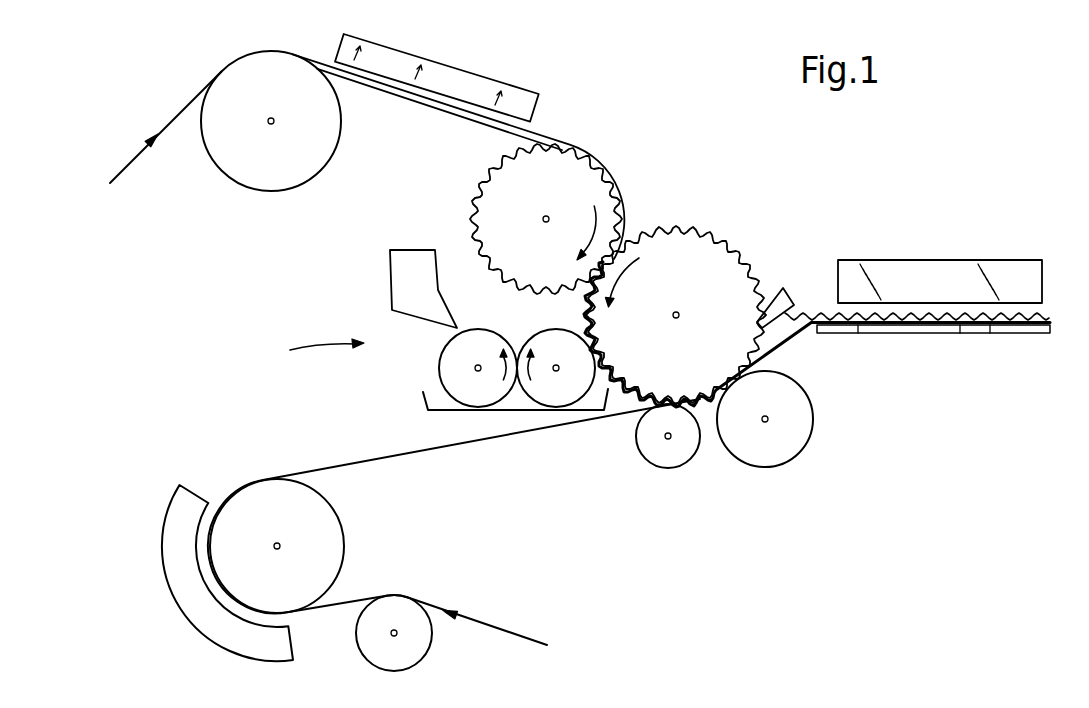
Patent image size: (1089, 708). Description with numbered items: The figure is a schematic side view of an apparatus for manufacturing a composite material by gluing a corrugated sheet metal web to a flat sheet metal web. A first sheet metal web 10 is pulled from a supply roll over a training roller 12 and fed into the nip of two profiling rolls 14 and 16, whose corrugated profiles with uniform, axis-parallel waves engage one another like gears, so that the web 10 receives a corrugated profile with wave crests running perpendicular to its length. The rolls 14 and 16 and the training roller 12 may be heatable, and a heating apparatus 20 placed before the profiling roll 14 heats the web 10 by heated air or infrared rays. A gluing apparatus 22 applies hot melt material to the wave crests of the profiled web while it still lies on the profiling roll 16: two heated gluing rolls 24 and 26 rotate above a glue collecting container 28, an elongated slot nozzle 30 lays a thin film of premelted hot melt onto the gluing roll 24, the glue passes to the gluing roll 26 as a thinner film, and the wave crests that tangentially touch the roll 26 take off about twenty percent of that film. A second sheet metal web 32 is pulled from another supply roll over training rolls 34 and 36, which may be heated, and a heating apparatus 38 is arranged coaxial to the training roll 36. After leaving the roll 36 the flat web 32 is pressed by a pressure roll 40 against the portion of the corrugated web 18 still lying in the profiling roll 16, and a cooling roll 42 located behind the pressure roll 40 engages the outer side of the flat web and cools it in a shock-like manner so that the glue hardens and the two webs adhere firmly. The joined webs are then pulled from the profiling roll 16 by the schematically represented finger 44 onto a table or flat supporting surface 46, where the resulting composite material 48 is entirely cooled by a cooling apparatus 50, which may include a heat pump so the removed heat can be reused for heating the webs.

The first sheet metal web 10 is at (412, 100).
The training roller 12 is at (255, 177).
The profiling roll 14 is at (593, 190).
The profiling roll 16 is at (707, 258).
The corrugated web 18 is at (640, 393).
The heating apparatus 20 is at (465, 75).
The gluing apparatus 22 is at (312, 351).
The gluing roll 24 is at (448, 357).
The gluing roll 26 is at (540, 343).
The glue collecting container 28 is at (422, 403).
The elongated slot nozzle 30 is at (402, 273).
The second sheet metal web 32 is at (455, 605).
The training roll 34 is at (420, 642).
The training roll 36 is at (330, 537).
The heating apparatus 38 is at (175, 563).
The pressure roll 40 is at (683, 448).
The cooling roll 42 is at (790, 442).
The finger 44 is at (788, 292).
The table or flat supporting surface 46 is at (907, 334).
The composite material 48 is at (988, 333).
The cooling apparatus 50 is at (927, 270).